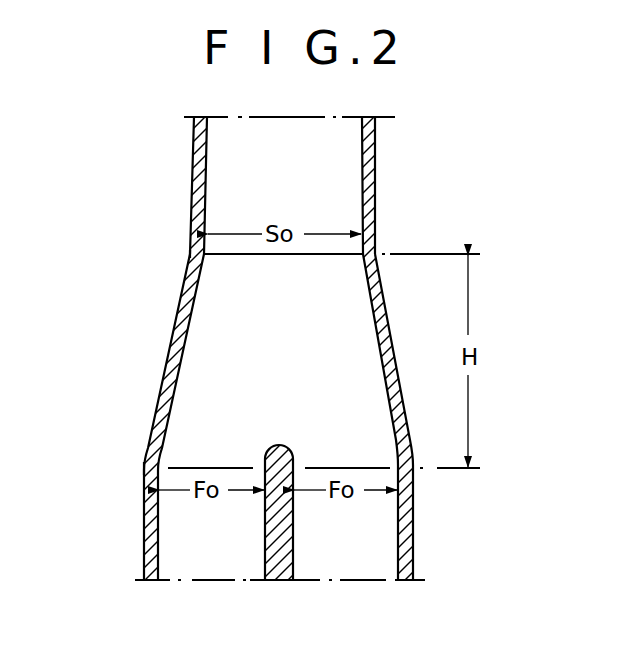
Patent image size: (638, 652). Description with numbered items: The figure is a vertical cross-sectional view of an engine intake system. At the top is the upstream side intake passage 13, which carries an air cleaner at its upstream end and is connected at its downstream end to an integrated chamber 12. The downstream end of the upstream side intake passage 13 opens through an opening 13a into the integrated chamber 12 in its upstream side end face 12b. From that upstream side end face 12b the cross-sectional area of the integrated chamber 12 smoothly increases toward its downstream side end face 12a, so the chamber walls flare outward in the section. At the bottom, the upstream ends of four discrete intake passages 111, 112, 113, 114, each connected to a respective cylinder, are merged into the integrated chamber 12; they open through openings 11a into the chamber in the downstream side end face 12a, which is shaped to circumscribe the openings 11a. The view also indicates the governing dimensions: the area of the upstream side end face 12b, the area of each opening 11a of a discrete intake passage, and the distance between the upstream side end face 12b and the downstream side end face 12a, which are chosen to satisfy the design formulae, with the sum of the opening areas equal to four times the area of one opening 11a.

The opening 11a is at (236, 466).
The integrated chamber 12 is at (193, 354).
The downstream side end face 12a is at (144, 462).
The upstream side end face 12b is at (189, 255).
The upstream side intake passage 13 is at (218, 174).
The opening 13a is at (286, 259).
The discrete intake passage 111 is at (200, 562).
The discrete intake passage 112 is at (266, 608).
The discrete intake passage 113 is at (342, 562).
The discrete intake passage 114 is at (391, 608).